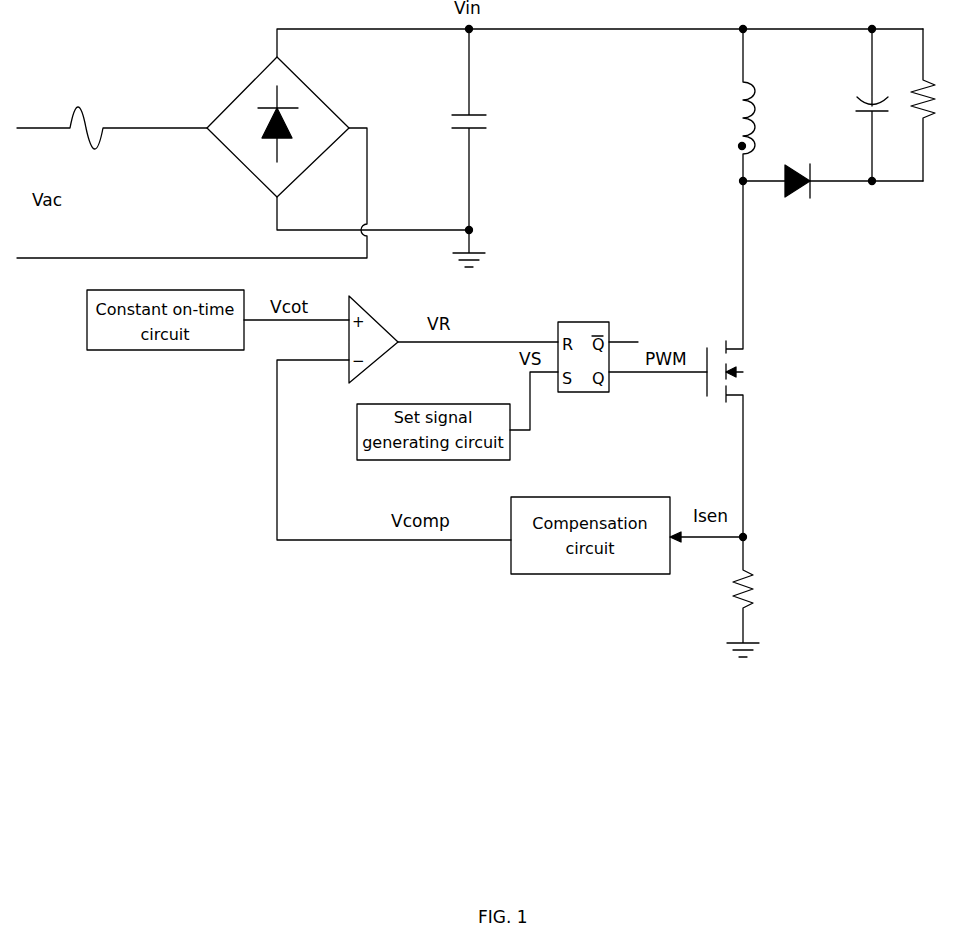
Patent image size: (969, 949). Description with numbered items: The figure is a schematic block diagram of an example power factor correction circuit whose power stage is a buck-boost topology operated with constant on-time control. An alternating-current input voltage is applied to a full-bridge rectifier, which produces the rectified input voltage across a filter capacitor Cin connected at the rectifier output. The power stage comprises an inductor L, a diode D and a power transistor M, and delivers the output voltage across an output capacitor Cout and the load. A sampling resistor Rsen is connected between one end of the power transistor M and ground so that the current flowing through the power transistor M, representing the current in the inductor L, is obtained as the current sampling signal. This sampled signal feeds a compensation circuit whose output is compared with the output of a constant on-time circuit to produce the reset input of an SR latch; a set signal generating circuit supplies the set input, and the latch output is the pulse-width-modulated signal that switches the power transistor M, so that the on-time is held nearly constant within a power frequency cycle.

The capacitor Cin is at (488, 148).
The inductor L is at (730, 105).
The diode D is at (833, 196).
The output capacitor Cout is at (845, 105).
The power transistor M is at (742, 359).
The sampling resistor Rsen is at (772, 597).